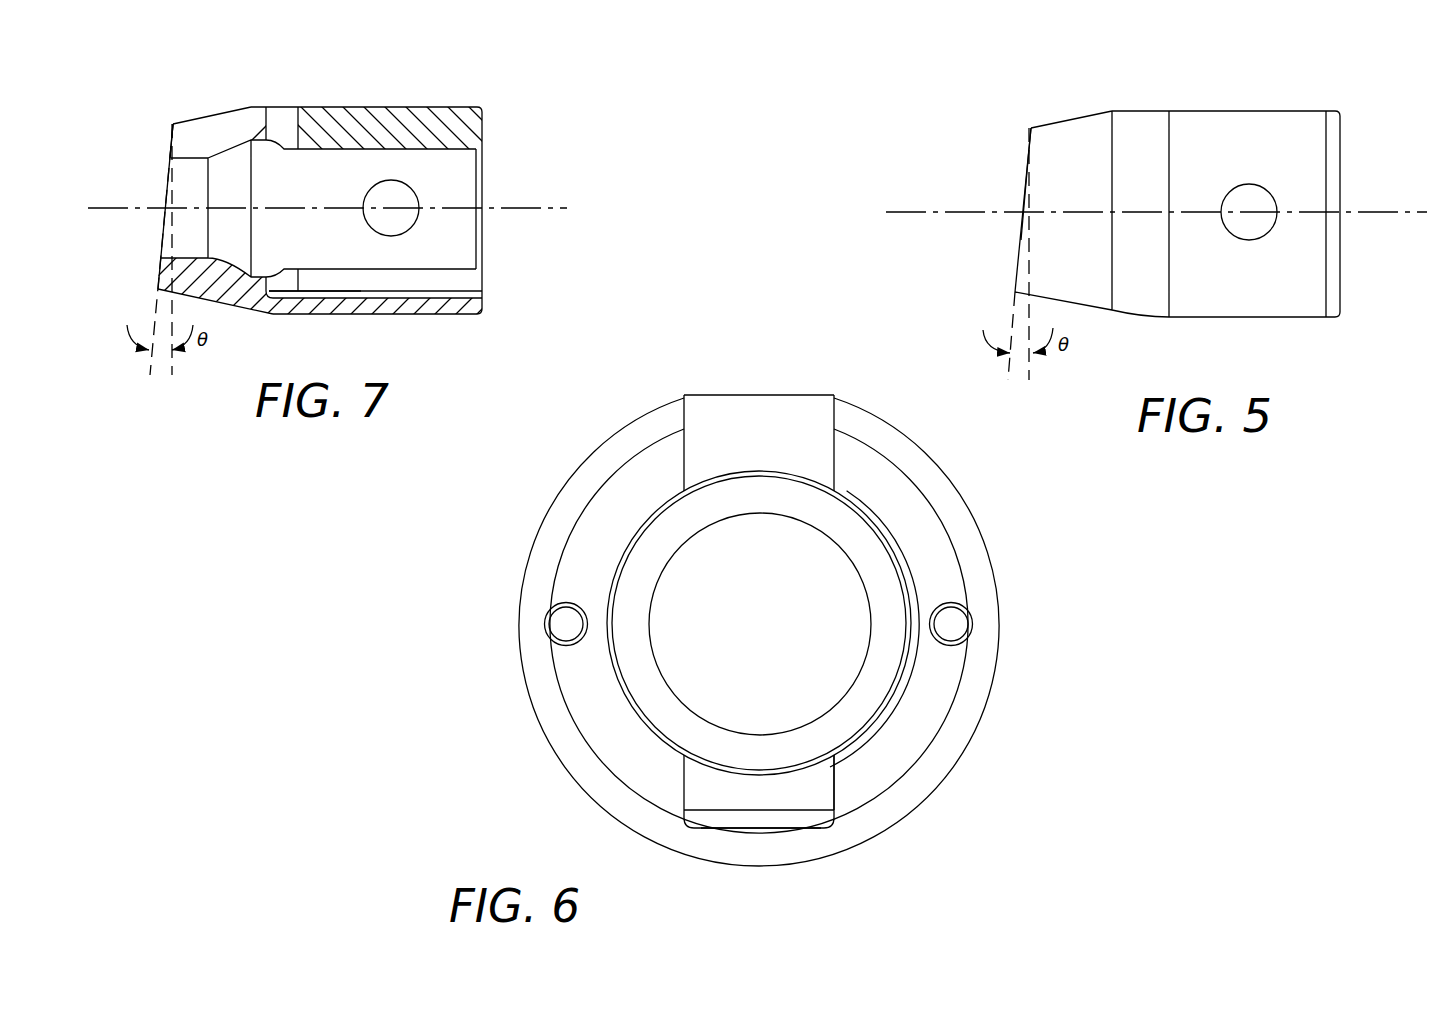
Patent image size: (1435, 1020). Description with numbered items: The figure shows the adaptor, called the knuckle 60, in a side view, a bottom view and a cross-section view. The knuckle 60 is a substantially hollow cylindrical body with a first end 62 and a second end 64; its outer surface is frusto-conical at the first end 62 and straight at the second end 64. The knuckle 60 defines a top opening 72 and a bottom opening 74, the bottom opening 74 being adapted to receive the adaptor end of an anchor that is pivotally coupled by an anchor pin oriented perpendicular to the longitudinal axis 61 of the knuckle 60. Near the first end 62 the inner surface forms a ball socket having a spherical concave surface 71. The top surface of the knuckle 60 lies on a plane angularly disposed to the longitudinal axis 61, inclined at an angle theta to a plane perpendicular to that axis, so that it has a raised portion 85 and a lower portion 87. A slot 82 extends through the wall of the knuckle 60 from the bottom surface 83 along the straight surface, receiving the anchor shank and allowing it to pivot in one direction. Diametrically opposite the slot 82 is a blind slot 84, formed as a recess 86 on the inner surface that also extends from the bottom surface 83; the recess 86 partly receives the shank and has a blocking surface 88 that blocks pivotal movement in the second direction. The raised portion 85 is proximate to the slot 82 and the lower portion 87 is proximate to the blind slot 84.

In FIG. 7, the knuckle 60 is at (391, 85).
In FIG. 5, the knuckle 60 is at (1243, 82).
In FIG. 6, the knuckle 60 is at (878, 371).
In FIG. 7, the longitudinal axis 61 is at (533, 207).
In FIG. 5, the longitudinal axis 61 is at (1359, 204).
In FIG. 7, the first end 62 is at (198, 130).
In FIG. 5, the first end 62 is at (1050, 129).
In FIG. 7, the second end 64 is at (446, 106).
In FIG. 5, the second end 64 is at (1295, 115).
In FIG. 7, the spherical concave surface 71 is at (229, 176).
In FIG. 6, the spherical concave surface 71 is at (883, 674).
In FIG. 5, the top opening 72 is at (989, 170).
In FIG. 6, the top opening 72 is at (817, 577).
In FIG. 7, the bottom opening 74 is at (492, 154).
In FIG. 5, the bottom opening 74 is at (1345, 150).
In FIG. 6, the bottom opening 74 is at (629, 664).
In FIG. 6, the slot 82 is at (728, 427).
In FIG. 6, the bottom surface 83 is at (610, 513).
In FIG. 7, the blind slot 84 is at (451, 277).
In FIG. 6, the blind slot 84 is at (697, 788).
In FIG. 7, the raised portion 85 is at (161, 233).
In FIG. 5, the raised portion 85 is at (1011, 245).
In FIG. 7, the recess 86 is at (408, 283).
In FIG. 6, the recess 86 is at (807, 790).
In FIG. 7, the lower portion 87 is at (168, 147).
In FIG. 5, the lower portion 87 is at (1021, 143).
In FIG. 7, the blocking surface 88 is at (348, 281).
In FIG. 6, the blocking surface 88 is at (734, 820).